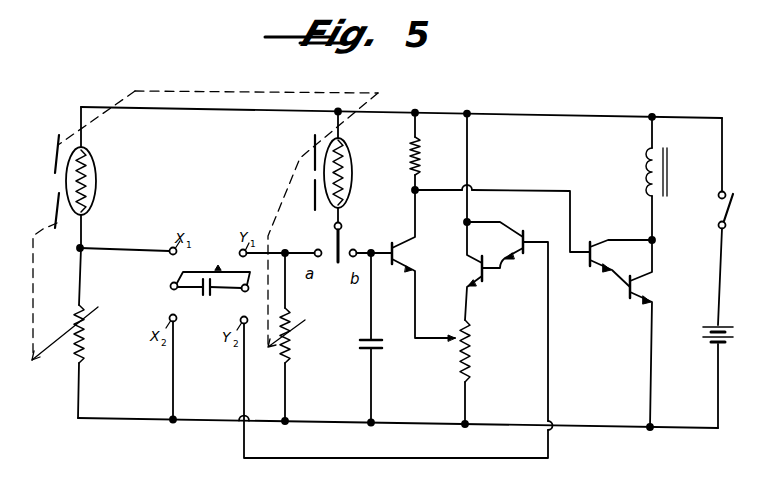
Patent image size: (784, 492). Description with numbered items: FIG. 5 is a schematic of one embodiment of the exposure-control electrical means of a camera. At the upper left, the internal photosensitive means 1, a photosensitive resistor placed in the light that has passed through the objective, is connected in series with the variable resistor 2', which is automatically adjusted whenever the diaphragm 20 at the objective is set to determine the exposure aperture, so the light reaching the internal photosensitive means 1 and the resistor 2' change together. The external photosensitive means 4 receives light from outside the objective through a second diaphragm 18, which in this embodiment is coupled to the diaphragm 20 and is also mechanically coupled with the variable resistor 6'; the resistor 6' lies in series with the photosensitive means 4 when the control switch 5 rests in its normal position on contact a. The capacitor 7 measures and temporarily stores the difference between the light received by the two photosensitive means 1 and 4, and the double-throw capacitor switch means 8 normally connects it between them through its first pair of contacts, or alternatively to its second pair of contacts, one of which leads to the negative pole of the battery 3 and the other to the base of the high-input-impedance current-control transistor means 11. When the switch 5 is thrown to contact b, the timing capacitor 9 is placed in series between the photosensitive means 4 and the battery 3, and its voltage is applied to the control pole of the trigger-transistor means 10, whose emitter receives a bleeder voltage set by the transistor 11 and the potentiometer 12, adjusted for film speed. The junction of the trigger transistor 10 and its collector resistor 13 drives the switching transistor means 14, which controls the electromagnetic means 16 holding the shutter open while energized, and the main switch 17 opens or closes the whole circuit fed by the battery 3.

The internal photosensitive means 1 is at (97, 182).
The diaphragm 20 is at (54, 201).
The variable resistor 2' is at (72, 334).
The capacitor switch means 8 is at (183, 272).
The capacitor 7 is at (206, 296).
The diaphragm 18 is at (313, 141).
The external photosensitive means 4 is at (352, 176).
The control switch 5 is at (336, 265).
The variable resistor 6' is at (291, 337).
The timing capacitor 9 is at (363, 358).
The trigger-transistor means 10 is at (400, 270).
The collector resistor 13 is at (420, 157).
The current-control transistor means 11 is at (502, 272).
The potentiometer 12 is at (470, 346).
The electromagnetic means 16 is at (646, 176).
The main switch 17 is at (721, 211).
The switching transistor means 14 is at (607, 288).
The battery 3 is at (715, 345).